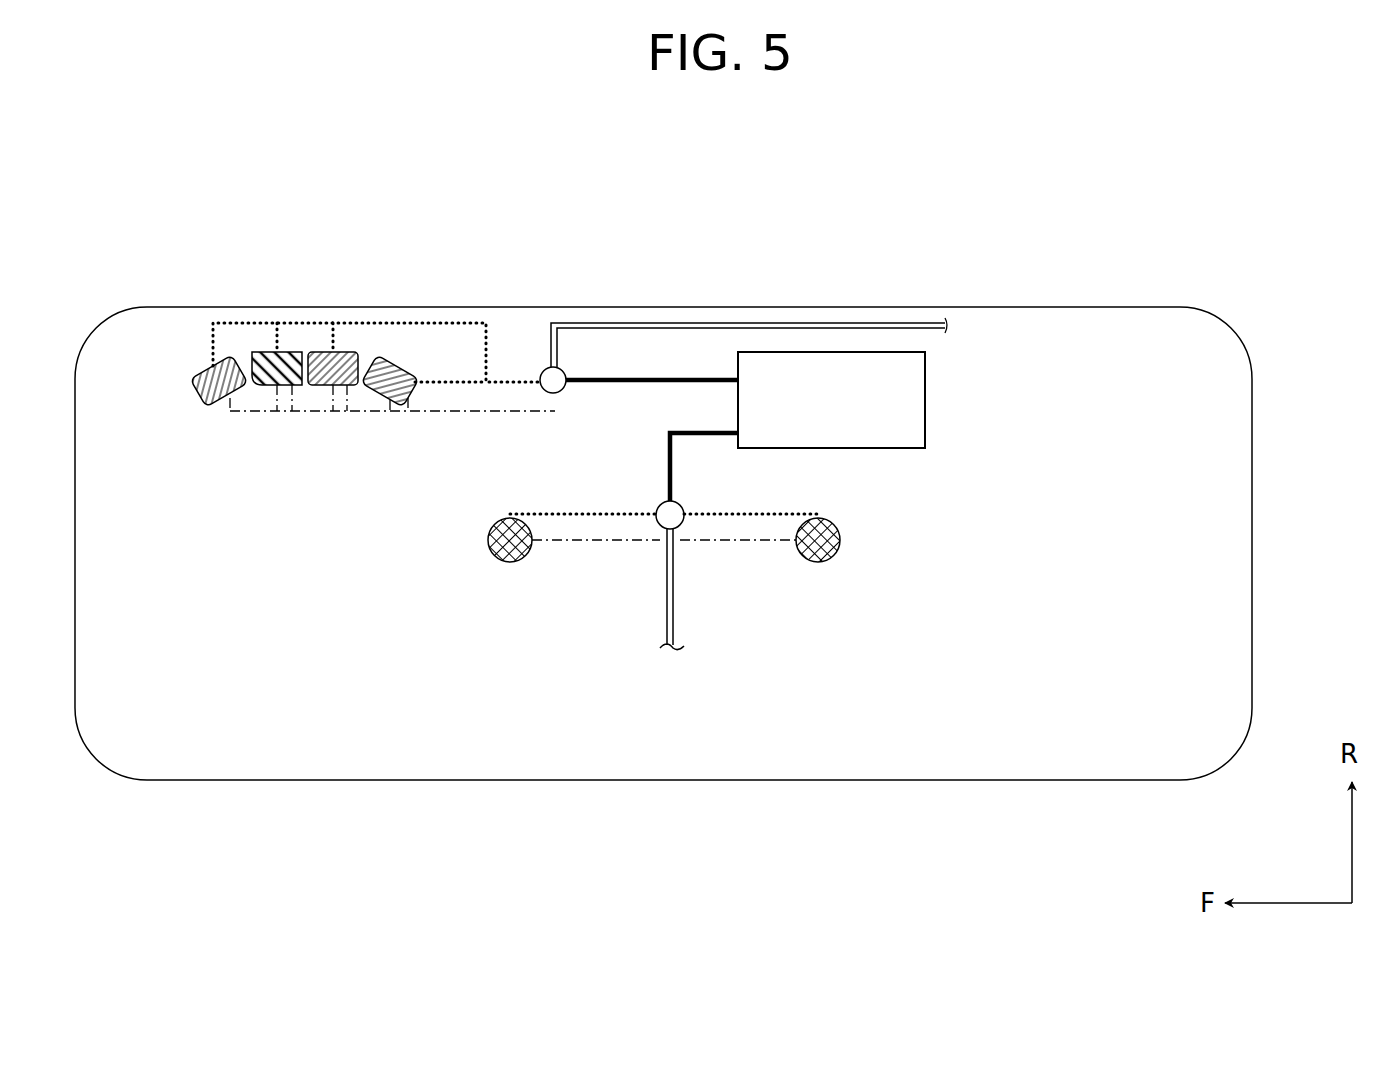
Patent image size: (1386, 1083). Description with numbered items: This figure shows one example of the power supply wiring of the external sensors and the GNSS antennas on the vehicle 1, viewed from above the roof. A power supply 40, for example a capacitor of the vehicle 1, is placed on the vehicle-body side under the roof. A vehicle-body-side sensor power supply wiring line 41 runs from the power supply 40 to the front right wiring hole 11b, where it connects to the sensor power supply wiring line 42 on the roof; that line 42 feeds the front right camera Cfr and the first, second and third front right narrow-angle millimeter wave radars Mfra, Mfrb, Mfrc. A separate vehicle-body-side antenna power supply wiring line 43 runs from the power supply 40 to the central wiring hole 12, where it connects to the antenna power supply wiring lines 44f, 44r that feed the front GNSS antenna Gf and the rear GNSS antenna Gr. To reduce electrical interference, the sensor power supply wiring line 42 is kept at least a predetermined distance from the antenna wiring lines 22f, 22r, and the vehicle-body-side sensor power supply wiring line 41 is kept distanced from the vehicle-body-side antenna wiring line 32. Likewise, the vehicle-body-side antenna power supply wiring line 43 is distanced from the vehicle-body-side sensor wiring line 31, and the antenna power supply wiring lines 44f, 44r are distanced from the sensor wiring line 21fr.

The vehicle 1 is at (1176, 151).
The sensor power supply wiring line 42 is at (440, 322).
The vehicle-body-side sensor power supply wiring line 41 is at (670, 378).
The vehicle-body-side sensor wiring line 31 is at (818, 322).
The power supply 40 is at (926, 425).
The front right wiring hole 11b is at (561, 391).
The vehicle-body-side antenna power supply wiring line 43 is at (689, 436).
The central wiring hole 12 is at (660, 505).
The antenna power supply wiring line 44f is at (572, 512).
The antenna power supply wiring line 44r is at (778, 512).
The vehicle-body-side antenna wiring line 32 is at (675, 625).
The antenna wiring line 22f is at (615, 542).
The antenna wiring line 22r is at (748, 542).
The sensor wiring line 21fr is at (490, 413).
The front GNSS antenna Gf is at (522, 558).
The rear GNSS antenna Gr is at (835, 556).
The first front right narrow-angle millimeter wave radar Mfra is at (215, 410).
The second front right narrow-angle millimeter wave radar Mfrb is at (345, 412).
The third front right narrow-angle millimeter wave radar Mfrc is at (410, 412).
The front right camera Cfr is at (292, 412).